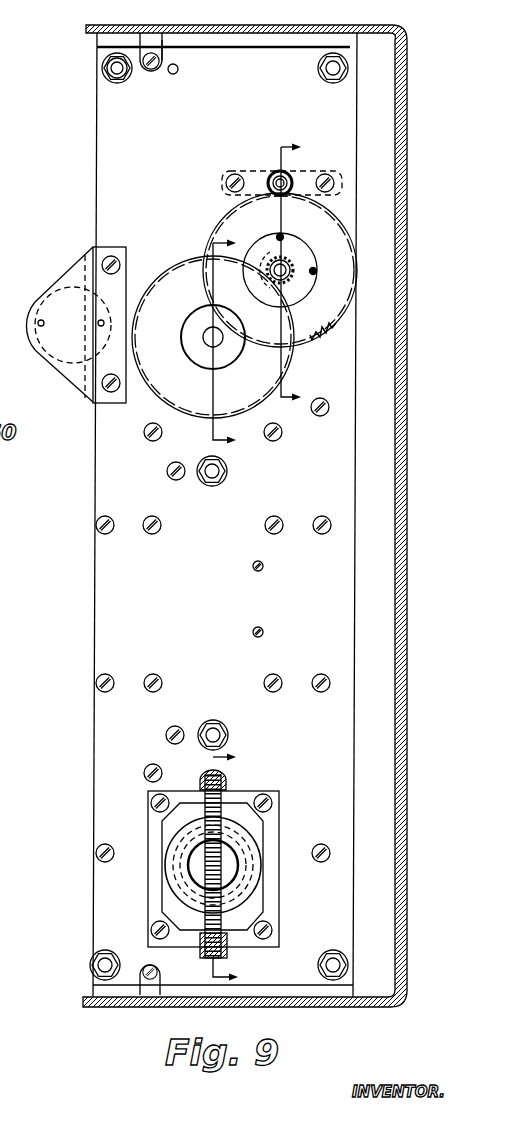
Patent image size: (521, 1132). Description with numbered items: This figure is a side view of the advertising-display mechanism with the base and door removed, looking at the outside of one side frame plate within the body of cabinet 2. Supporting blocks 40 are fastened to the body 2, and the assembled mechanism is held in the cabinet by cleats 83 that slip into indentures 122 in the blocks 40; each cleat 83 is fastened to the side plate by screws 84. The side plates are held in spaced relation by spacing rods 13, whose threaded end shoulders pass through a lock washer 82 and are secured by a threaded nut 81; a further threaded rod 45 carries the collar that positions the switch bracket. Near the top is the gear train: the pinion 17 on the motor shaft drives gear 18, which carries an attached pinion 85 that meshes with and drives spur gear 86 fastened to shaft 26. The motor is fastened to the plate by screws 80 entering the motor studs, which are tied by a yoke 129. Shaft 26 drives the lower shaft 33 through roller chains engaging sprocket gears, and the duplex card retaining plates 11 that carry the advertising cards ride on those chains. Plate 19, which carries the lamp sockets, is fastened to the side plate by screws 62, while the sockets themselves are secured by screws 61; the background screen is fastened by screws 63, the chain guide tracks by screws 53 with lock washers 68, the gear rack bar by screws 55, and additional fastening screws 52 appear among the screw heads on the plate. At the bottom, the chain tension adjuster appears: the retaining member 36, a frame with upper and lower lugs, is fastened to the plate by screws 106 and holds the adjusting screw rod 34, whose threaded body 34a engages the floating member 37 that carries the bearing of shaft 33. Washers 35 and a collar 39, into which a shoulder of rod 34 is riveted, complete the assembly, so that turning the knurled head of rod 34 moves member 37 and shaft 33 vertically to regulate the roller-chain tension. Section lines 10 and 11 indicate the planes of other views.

The body of cabinet 2 is at (401, 110).
The supporting blocks 40 is at (350, 43).
The threaded nut 81 is at (104, 64).
The lock washer 82 is at (107, 78).
The spacing rods 13 is at (118, 72).
The indentures 122 is at (152, 33).
The cleats 83 is at (162, 60).
The screws 84 is at (154, 68).
The rod 45 is at (178, 69).
The yoke 129 is at (234, 172).
The pinion 17 is at (273, 172).
The screws 80 is at (338, 181).
The section line 10 is at (299, 264).
The duplex card retaining plates 11 is at (233, 343).
The gear 18 is at (343, 224).
The pinion 85 is at (352, 302).
The spur gear 86 is at (306, 358).
The shaft 26 is at (220, 344).
The plate 19 is at (120, 247).
The screws 61 is at (40, 327).
The screws 62 is at (106, 383).
The screws 63 is at (179, 465).
The lock washers 68 is at (151, 517).
The screws 53 is at (162, 522).
The screw 52 is at (104, 535).
The screws 55 is at (259, 571).
The retaining member 36 is at (280, 826).
The threaded body 34a is at (205, 912).
The floating member 37 is at (202, 823).
The shaft 33 is at (204, 866).
The screw rod 34 is at (222, 776).
The washers 35 is at (226, 789).
The collar 39 is at (227, 954).
The screws 106 is at (272, 938).